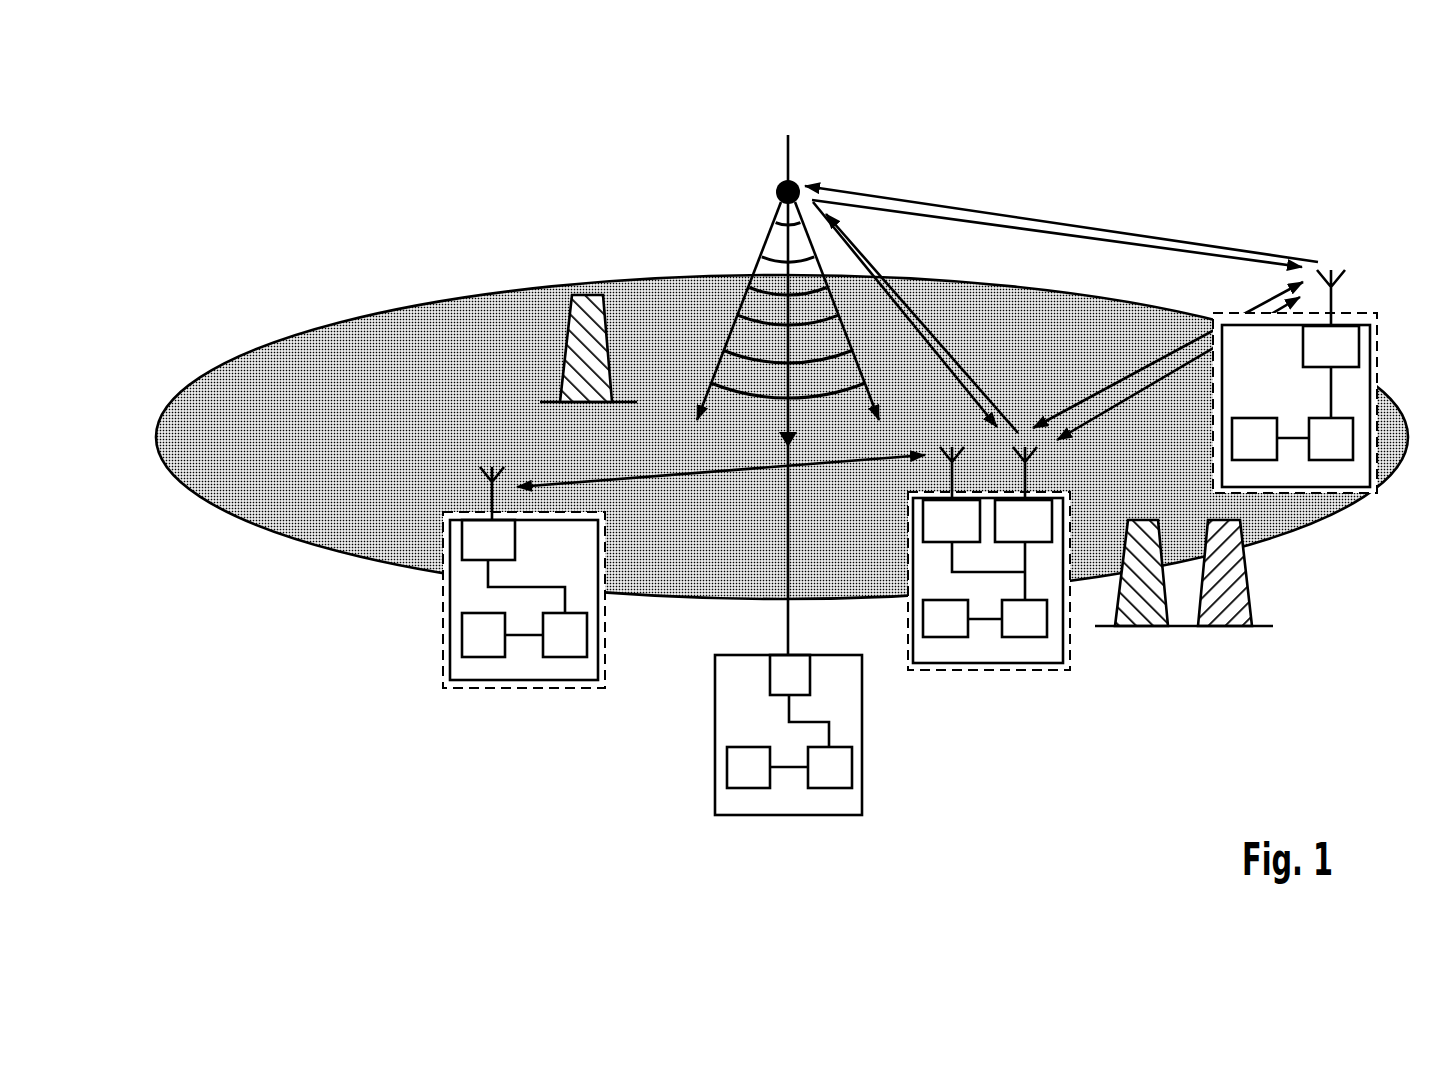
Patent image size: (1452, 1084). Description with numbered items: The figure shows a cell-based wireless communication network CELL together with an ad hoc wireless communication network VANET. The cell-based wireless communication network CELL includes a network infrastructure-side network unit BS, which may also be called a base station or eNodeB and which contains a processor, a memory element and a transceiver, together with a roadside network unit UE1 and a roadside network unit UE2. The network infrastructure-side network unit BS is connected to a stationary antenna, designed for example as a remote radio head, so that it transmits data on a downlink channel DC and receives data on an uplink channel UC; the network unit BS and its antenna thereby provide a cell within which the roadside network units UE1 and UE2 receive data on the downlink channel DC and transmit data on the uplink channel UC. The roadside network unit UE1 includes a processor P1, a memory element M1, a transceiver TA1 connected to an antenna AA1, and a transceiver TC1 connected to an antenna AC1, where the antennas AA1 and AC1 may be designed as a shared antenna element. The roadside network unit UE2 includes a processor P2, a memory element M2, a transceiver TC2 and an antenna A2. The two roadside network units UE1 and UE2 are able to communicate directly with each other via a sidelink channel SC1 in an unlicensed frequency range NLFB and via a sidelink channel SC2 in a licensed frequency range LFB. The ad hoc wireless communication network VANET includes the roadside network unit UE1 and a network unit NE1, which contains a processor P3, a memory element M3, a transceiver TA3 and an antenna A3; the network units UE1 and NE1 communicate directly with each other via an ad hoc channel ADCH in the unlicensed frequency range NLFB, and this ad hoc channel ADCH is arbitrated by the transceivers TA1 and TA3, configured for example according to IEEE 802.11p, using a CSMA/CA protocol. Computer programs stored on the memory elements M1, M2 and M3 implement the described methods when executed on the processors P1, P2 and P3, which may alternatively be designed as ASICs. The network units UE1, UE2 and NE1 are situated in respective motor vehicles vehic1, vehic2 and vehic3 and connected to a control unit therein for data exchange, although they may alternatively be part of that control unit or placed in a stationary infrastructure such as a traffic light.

The network infrastructure-side network unit BS is at (833, 746).
The cell-based wireless communication network CELL is at (1090, 176).
The ad hoc wireless communication network VANET is at (665, 340).
The uplink channel UC is at (893, 197).
The downlink channel DC is at (983, 221).
The sidelink channel SC1 is at (1264, 297).
The sidelink channel SC2 is at (1137, 393).
The ad hoc channel ADCH is at (712, 472).
The unlicensed frequency range NLFB is at (586, 292).
The licensed frequency range LFB is at (1233, 617).
The motor vehicle vehic1 is at (1035, 672).
The roadside network unit UE1 is at (988, 622).
The transceiver TA1 is at (929, 534).
The transceiver TC1 is at (1001, 534).
The memory element M1 is at (930, 631).
The processor P1 is at (1009, 631).
The antenna AA1 is at (950, 456).
The antenna AC1 is at (1030, 482).
The motor vehicle vehic2 is at (1288, 500).
The roadside network unit UE2 is at (1296, 448).
The transceiver TC2 is at (1310, 359).
The memory element M2 is at (1238, 450).
The processor P2 is at (1315, 450).
The antenna A2 is at (1334, 306).
The motor vehicle vehic3 is at (472, 690).
The network unit NE1 is at (524, 643).
The transceiver TA3 is at (467, 552).
The memory element M3 is at (469, 647).
The processor P3 is at (565, 635).
The antenna A3 is at (488, 505).